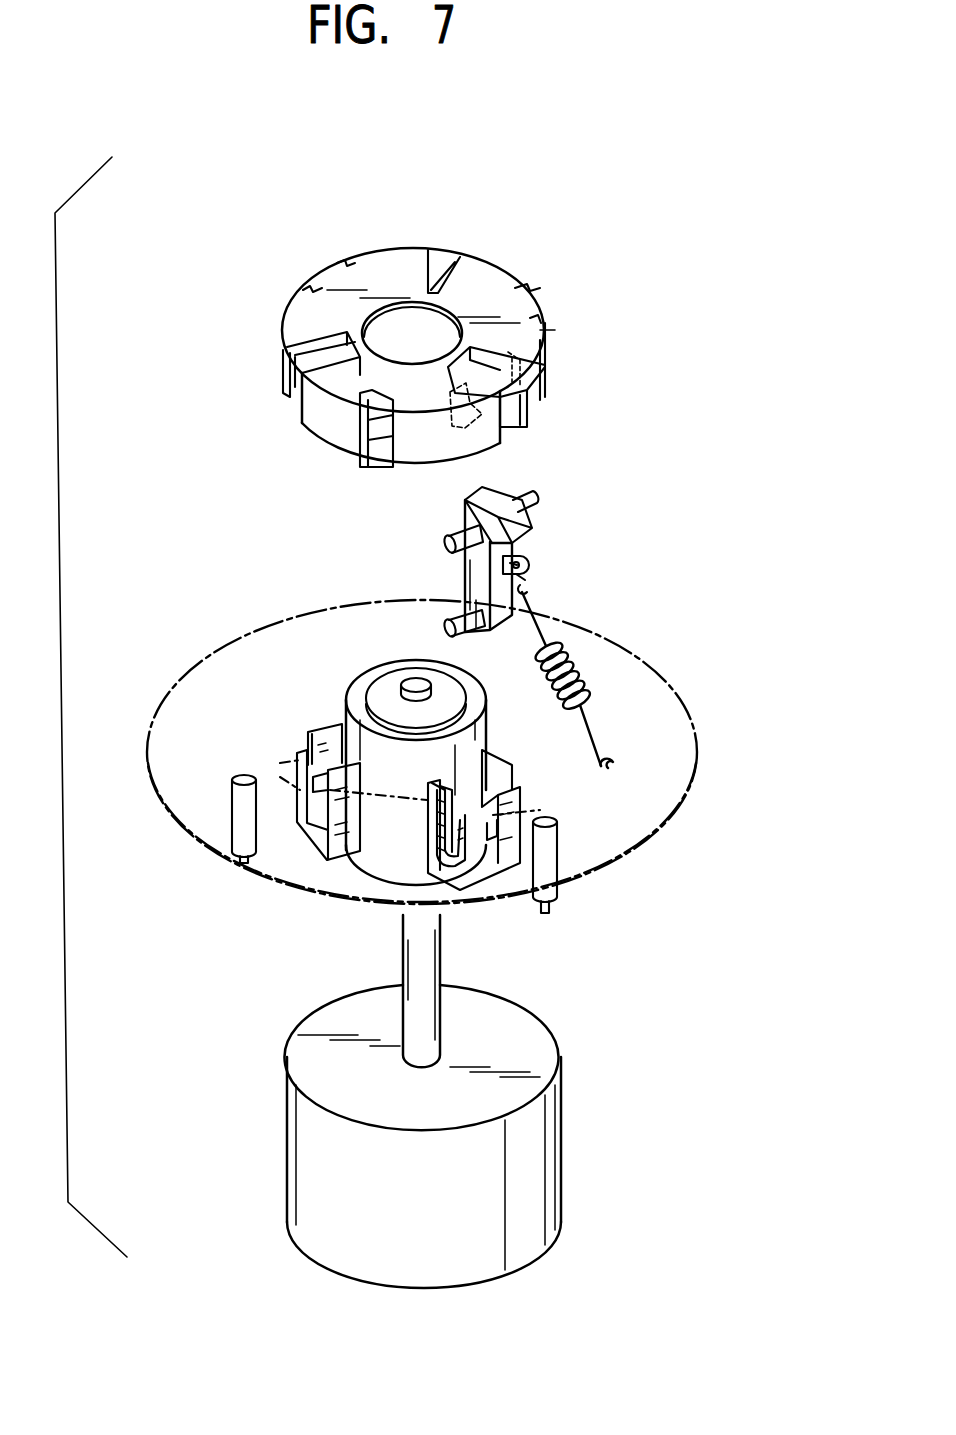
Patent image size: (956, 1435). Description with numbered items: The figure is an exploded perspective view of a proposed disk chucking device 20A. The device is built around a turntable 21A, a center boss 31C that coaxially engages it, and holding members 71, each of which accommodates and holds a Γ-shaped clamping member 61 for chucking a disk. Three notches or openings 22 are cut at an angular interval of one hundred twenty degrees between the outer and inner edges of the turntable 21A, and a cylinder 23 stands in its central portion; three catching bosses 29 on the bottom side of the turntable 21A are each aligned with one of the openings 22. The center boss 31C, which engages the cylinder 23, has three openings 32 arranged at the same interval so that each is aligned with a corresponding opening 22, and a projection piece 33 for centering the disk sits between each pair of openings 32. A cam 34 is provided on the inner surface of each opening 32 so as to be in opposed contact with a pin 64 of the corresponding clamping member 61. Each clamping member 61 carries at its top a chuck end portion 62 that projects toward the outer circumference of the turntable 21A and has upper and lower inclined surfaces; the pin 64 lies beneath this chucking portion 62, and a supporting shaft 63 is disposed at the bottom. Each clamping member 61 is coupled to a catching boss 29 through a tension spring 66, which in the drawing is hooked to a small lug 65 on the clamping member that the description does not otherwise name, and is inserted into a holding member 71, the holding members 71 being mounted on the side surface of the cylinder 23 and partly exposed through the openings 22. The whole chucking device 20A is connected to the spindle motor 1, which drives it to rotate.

The spindle motor 1 is at (557, 1033).
The disk chucking device 20A is at (336, 253).
The turntable 21A is at (230, 672).
The notches (openings) 22 is at (280, 763).
The cylinder 23 is at (360, 680).
The catching bosses 29 is at (237, 818).
The center boss 31C is at (300, 307).
The notches (openings) 32 is at (315, 360).
The projection pieces 33 is at (372, 460).
The cam 34 is at (493, 340).
The clamping member 61 is at (552, 513).
The chuck end portion 62 is at (533, 537).
The supporting shaft 63 is at (452, 622).
The pin 64 is at (452, 544).
The hook 65 is at (524, 570).
The tension spring 66 is at (582, 674).
The holding members 71 is at (316, 726).